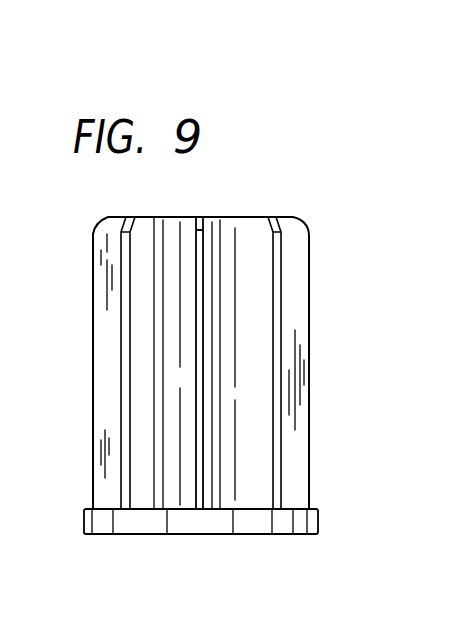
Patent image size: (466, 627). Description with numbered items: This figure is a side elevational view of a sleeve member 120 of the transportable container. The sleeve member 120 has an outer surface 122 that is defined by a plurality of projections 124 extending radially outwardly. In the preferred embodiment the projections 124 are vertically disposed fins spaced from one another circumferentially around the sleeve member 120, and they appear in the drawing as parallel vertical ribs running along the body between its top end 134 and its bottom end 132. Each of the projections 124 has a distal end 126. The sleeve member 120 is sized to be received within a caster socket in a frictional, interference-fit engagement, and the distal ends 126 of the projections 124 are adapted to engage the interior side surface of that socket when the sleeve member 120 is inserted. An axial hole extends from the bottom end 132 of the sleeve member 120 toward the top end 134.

The sleeve member 120 is at (289, 212).
The outer surface 122 is at (310, 309).
The projections 124 is at (250, 240).
The distal end 126 is at (279, 278).
The bottom end 132 is at (209, 534).
The top end 134 is at (158, 216).